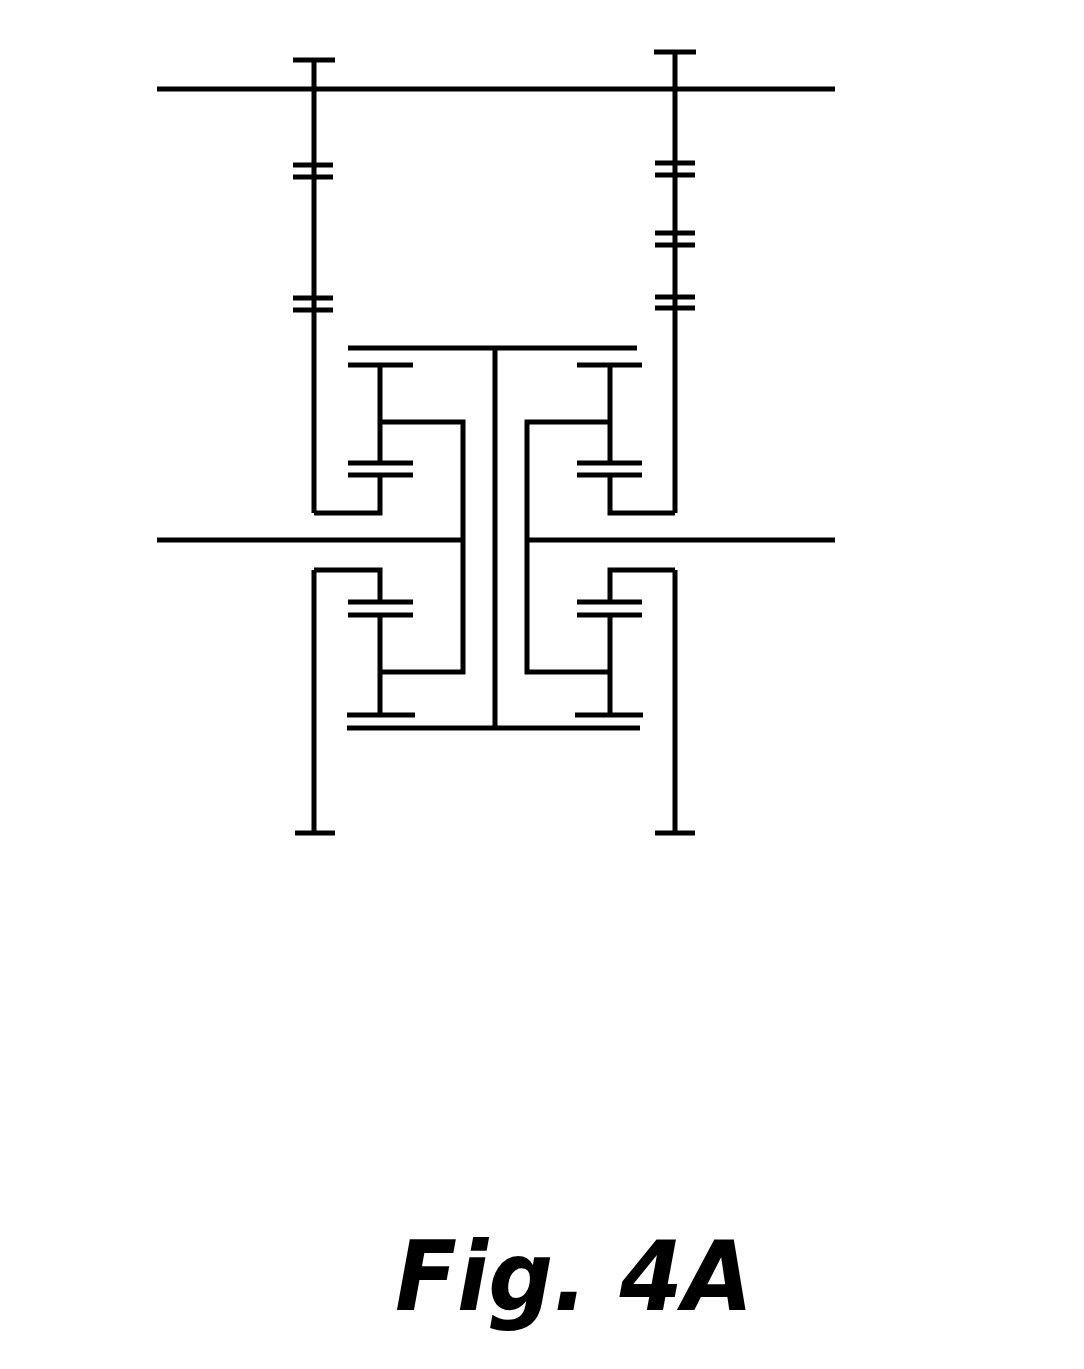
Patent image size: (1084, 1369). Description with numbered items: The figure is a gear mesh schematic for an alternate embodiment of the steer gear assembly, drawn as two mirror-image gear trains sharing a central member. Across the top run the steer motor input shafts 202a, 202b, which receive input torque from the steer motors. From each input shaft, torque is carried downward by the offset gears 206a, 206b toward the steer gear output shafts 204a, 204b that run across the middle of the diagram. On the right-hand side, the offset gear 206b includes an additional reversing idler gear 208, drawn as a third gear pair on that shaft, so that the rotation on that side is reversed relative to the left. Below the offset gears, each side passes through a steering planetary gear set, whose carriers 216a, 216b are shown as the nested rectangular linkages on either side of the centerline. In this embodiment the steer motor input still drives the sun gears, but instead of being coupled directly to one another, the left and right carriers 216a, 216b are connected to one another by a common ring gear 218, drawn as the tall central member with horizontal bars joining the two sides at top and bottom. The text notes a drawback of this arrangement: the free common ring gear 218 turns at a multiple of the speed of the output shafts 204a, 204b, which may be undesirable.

The steer motor input shaft 202a is at (208, 88).
The steer motor input shaft 202b is at (776, 88).
The steer gear output shaft 204a is at (211, 538).
The steer gear output shaft 204b is at (776, 540).
The offset gear 206a is at (280, 188).
The offset gear 206b is at (710, 168).
The reversing idler gear 208 is at (715, 255).
The carrier 216a is at (443, 677).
The carrier 216b is at (570, 677).
The common ring gear 218 is at (468, 348).